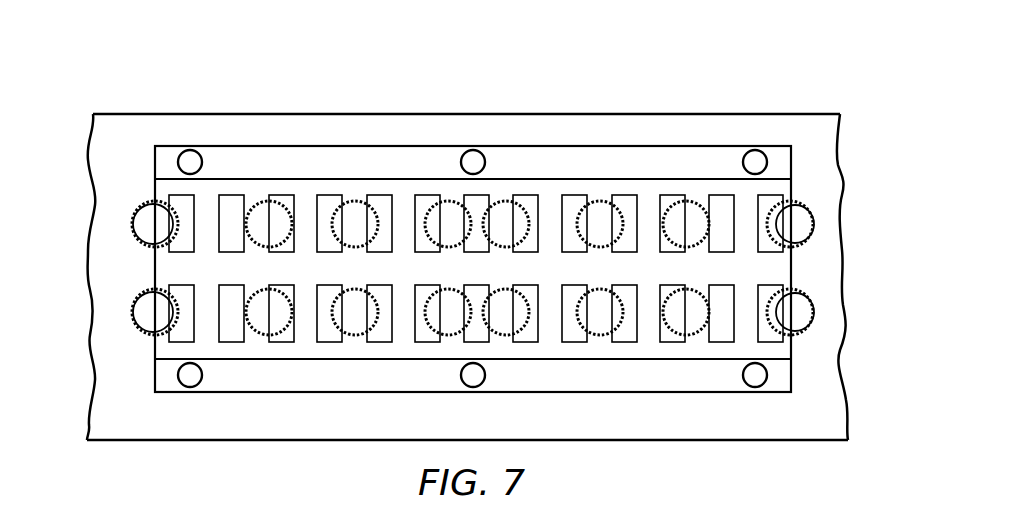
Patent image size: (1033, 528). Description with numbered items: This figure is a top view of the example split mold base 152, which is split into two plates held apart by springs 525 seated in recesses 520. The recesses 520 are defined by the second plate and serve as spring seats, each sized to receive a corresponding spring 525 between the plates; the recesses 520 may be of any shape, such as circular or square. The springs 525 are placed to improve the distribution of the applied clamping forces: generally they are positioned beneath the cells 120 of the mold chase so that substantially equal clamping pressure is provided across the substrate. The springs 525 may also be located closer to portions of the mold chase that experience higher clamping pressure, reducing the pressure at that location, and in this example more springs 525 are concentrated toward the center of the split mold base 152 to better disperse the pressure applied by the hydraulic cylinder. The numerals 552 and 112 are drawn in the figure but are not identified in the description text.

The split mold base 152 is at (176, 58).
The cells 120 is at (332, 195).
The recesses 520 is at (132, 232).
The springs 525 is at (144, 204).
The substrate 552 is at (162, 440).
The circuit board 112 is at (328, 392).